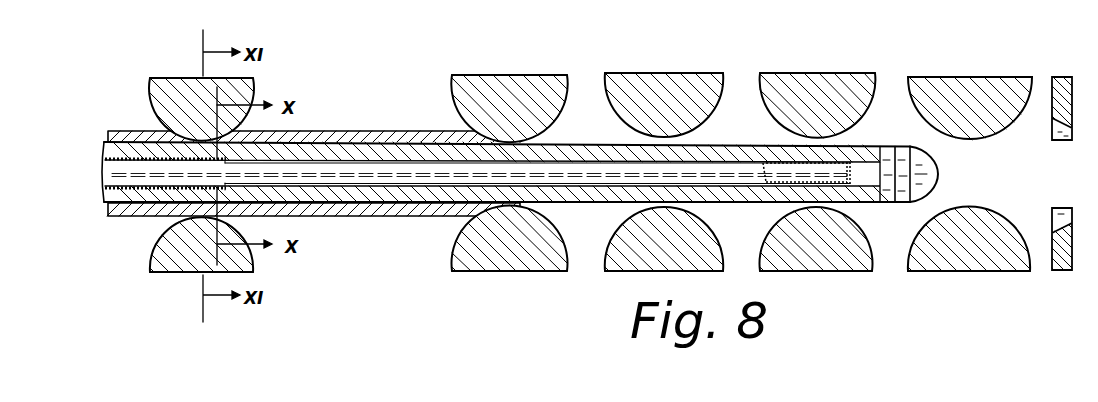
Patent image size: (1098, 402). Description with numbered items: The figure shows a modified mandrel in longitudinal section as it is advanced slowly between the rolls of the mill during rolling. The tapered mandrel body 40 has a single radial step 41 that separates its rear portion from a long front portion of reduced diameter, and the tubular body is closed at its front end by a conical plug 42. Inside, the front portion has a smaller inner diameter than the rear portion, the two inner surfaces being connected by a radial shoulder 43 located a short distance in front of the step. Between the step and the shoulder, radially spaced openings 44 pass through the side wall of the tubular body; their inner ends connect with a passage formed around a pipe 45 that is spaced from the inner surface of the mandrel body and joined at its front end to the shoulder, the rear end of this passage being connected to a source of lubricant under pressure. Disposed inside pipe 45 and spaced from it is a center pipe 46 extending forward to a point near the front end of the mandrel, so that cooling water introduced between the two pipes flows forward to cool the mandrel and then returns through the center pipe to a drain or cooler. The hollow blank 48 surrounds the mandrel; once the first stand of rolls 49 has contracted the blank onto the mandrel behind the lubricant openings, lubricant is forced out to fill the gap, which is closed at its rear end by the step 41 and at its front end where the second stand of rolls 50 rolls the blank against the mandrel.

The mandrel body 40 is at (105, 148).
The radial step 41 is at (197, 202).
The conical plug 42 is at (939, 174).
The radial shoulder 43 is at (236, 157).
The openings 44 is at (224, 198).
The pipe 45 is at (110, 189).
The center pipe 46 is at (118, 174).
The hollow blank 48 is at (138, 131).
The first stand of rolls 49 is at (179, 87).
The second stand of rolls 50 is at (517, 87).